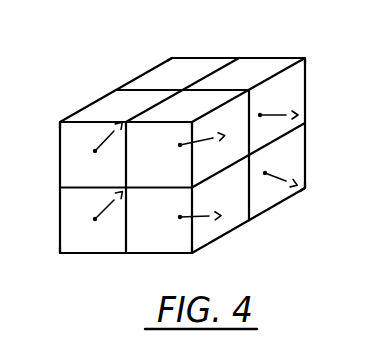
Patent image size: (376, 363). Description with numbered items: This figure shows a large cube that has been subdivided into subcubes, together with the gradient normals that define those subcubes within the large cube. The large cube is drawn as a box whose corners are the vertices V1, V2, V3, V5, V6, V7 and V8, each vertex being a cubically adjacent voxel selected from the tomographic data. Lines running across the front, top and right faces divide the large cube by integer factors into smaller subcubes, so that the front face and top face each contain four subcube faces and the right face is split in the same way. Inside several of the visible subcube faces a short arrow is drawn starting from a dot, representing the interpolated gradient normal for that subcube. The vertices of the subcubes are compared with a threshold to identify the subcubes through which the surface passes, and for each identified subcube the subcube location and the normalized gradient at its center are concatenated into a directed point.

The vertex V1 is at (58, 263).
The vertex V2 is at (190, 263).
The vertex V3 is at (316, 191).
The vertex V5 is at (45, 122).
The vertex V6 is at (187, 116).
The vertex V7 is at (317, 56).
The vertex V8 is at (173, 47).